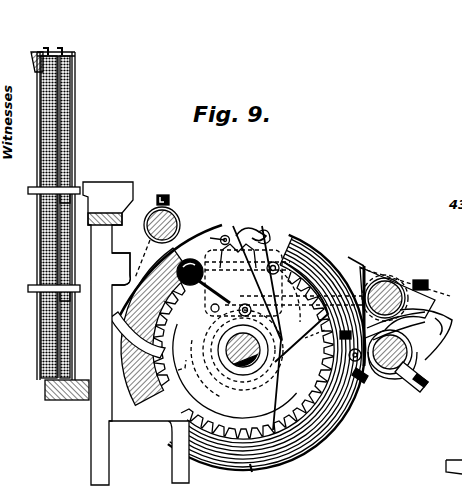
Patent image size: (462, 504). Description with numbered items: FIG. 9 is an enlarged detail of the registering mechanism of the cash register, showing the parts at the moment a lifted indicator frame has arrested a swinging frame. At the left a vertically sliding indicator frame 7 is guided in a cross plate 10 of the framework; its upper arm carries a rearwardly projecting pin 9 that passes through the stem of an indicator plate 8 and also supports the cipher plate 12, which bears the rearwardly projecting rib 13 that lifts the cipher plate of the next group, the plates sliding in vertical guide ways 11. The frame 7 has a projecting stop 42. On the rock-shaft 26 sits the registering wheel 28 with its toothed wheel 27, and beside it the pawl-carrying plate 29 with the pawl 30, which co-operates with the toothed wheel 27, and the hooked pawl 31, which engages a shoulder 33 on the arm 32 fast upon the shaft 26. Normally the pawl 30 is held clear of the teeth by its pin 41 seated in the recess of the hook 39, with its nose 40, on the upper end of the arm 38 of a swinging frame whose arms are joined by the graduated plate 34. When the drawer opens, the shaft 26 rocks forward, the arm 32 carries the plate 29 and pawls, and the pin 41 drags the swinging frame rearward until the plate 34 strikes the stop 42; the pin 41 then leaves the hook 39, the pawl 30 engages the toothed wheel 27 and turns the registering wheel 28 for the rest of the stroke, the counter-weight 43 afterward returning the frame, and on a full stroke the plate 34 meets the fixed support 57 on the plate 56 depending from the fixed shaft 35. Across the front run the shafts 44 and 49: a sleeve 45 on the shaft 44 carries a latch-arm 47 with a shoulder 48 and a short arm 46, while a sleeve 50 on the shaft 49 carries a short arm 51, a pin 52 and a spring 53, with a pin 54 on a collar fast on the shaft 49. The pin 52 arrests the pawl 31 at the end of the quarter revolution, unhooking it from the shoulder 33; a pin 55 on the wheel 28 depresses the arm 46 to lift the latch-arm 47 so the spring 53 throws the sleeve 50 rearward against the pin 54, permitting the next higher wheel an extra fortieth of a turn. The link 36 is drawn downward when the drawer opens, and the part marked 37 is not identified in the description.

The indicator frame 7 is at (108, 333).
The indicator plate 8 is at (70, 142).
The pin 9 is at (36, 194).
The cross plate 10 is at (62, 400).
The vertical guide ways 11 is at (76, 112).
The cipher indicator plate 12 is at (42, 146).
The rearwardly projecting plate 13 is at (31, 60).
The rock-shaft 26 is at (243, 350).
The toothed wheel 27 is at (316, 374).
The registering wheel 28 is at (355, 410).
The pawl-carrying plate 29 is at (292, 300).
The pawl 30 is at (213, 235).
The pawl 31 is at (296, 243).
The arm 32 is at (316, 346).
The shoulder 33 is at (324, 312).
The graduated plate 34 is at (228, 440).
The fixed shaft 35 is at (177, 216).
The link 36 is at (158, 198).
The lug 37 is at (130, 268).
The pendent arm 38 is at (224, 383).
The hook 39 is at (225, 235).
The nose 40 is at (262, 230).
The pin 41 is at (246, 228).
The stop 42 is at (171, 438).
The counter-weight 43 is at (196, 284).
The shaft 44 is at (395, 287).
The sleeve 45 is at (384, 280).
The short arm 46 is at (344, 334).
The latch-arm 47 is at (440, 312).
The shoulder 48 is at (430, 290).
The shaft 49 is at (400, 384).
The sleeve 50 is at (414, 355).
The short arm 51 is at (422, 326).
The pin 52 is at (348, 363).
The spring 53 is at (350, 256).
The pin 54 is at (363, 380).
The pins 55 is at (252, 474).
The plate 56 is at (208, 345).
The fixed support 57 is at (178, 370).